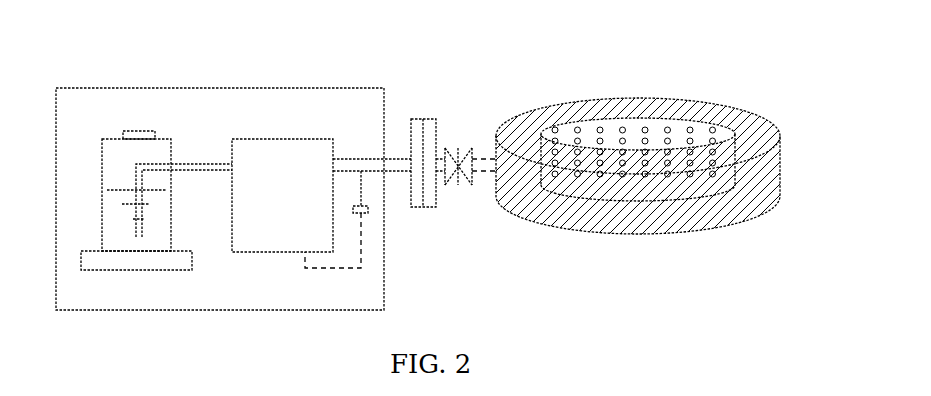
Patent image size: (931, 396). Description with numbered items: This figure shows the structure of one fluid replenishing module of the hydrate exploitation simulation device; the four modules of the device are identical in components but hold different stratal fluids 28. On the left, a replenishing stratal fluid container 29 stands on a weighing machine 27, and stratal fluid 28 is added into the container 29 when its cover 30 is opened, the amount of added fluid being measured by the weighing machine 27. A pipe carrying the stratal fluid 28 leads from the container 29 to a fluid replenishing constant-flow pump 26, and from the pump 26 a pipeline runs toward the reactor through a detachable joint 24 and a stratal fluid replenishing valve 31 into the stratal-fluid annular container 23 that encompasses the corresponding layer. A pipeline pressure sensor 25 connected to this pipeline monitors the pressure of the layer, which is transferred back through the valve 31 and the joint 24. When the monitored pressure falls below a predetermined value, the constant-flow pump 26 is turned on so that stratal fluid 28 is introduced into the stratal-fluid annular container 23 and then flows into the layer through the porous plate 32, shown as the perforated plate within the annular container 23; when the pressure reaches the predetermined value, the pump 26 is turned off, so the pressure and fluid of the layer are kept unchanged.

The stratal-fluid annular container 23 is at (638, 182).
The detachable joint 24 is at (464, 203).
The pipeline pressure sensor 25 is at (374, 229).
The fluid replenishing constant-flow pump 26 is at (282, 223).
The weighing machine 27 is at (137, 280).
The stratal fluid 28 is at (177, 200).
The replenishing stratal fluid container 29 is at (163, 191).
The cover of the replenishing stratal fluid container 30 is at (174, 119).
The stratal fluid replenishing valve 31 is at (481, 130).
The porous plate 32 is at (634, 113).